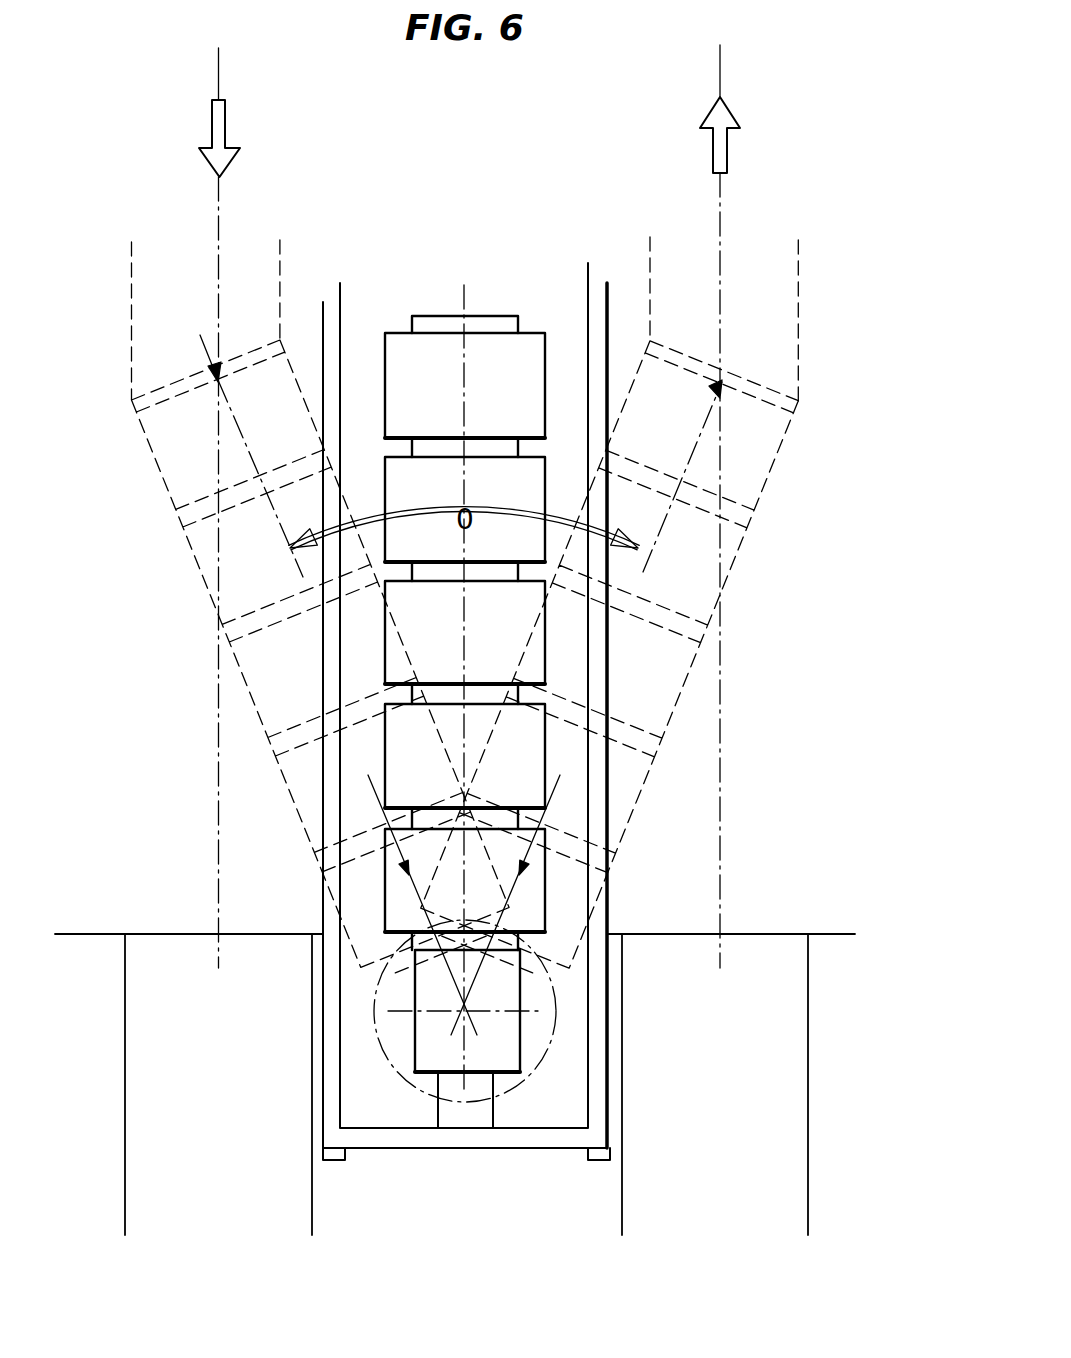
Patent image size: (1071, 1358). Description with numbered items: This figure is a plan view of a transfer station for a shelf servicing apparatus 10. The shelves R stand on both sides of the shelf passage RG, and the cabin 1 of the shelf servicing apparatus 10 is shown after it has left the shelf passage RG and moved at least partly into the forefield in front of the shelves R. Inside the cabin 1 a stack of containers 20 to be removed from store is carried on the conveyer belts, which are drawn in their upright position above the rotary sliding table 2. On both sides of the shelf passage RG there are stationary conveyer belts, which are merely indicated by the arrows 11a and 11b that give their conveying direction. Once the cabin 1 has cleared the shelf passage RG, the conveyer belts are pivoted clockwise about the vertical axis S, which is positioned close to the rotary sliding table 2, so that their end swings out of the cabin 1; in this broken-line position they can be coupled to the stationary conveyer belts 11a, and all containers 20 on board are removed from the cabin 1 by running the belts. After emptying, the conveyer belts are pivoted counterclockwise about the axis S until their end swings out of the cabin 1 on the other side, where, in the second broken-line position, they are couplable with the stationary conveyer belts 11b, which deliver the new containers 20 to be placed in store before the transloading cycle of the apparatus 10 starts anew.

The cabin 1 is at (608, 913).
The rotary sliding table 2 is at (505, 1052).
The transfer apparatus 10 is at (538, 259).
The stationary conveyer belts 11a is at (730, 145).
The stationary conveyer belts 11b is at (228, 128).
The container 20 is at (506, 424).
The vertical axis S is at (463, 1014).
The shelf passage RG is at (467, 1137).
The shelves R is at (455, 1084).